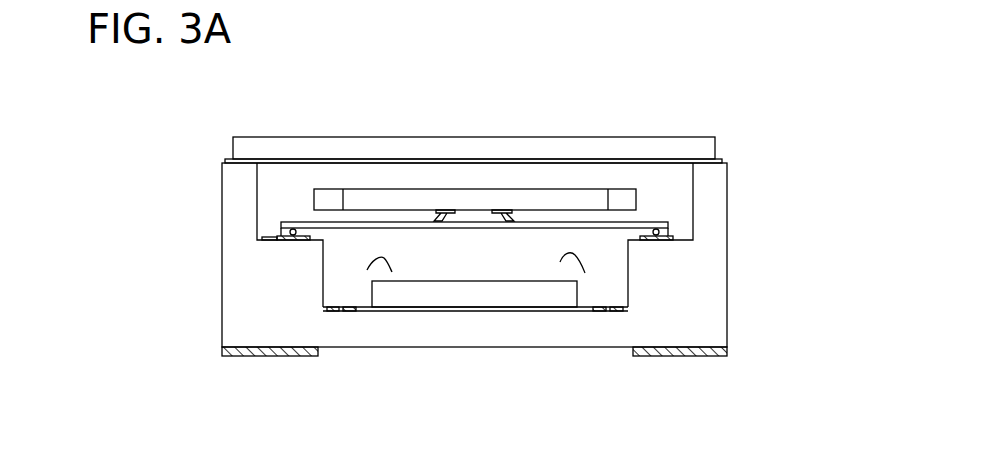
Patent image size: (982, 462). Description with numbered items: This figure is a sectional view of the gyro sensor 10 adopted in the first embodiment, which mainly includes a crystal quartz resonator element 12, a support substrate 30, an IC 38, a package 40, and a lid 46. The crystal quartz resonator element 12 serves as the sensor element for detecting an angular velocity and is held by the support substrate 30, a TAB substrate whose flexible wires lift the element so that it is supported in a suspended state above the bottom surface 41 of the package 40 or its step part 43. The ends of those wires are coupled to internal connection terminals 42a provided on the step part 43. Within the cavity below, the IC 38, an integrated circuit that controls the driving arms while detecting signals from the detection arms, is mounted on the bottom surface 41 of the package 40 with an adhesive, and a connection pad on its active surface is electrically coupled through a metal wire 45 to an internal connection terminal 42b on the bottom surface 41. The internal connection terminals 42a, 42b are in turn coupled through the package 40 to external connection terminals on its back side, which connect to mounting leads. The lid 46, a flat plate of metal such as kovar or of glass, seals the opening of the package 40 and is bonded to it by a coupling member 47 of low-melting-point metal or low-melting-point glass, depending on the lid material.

The gyro sensor 10 is at (621, 110).
The crystal quartz resonator element 12 is at (434, 188).
The support substrate 30 is at (650, 216).
The IC 38 is at (478, 295).
The package 40 is at (703, 272).
The bottom surface 41 is at (598, 283).
The internal connection terminal 42a is at (305, 240).
The internal connection terminal 42b is at (342, 313).
The step part 43 is at (272, 240).
The metal wire 45 is at (344, 306).
The lid 46 is at (665, 150).
The coupling member 47 is at (710, 160).